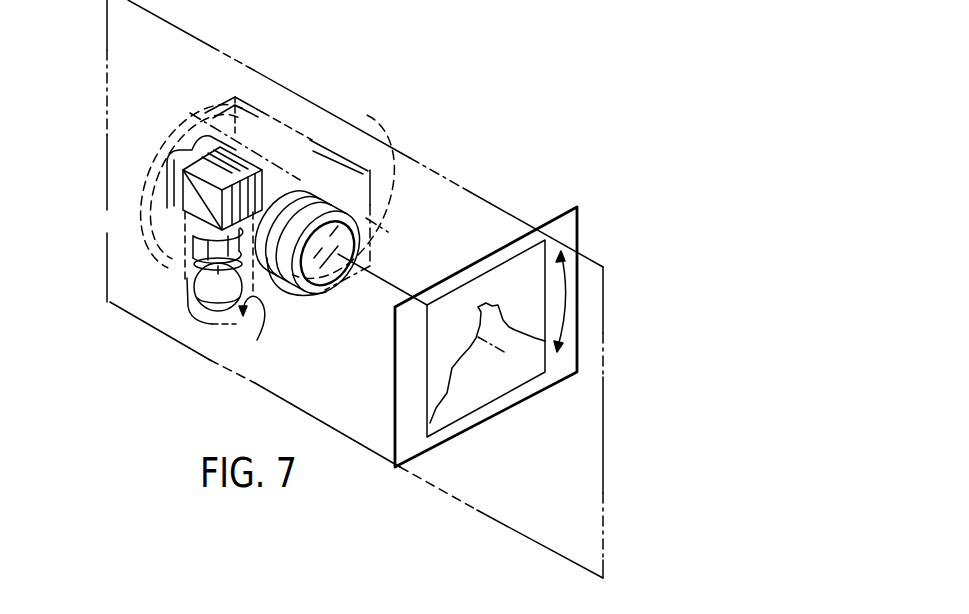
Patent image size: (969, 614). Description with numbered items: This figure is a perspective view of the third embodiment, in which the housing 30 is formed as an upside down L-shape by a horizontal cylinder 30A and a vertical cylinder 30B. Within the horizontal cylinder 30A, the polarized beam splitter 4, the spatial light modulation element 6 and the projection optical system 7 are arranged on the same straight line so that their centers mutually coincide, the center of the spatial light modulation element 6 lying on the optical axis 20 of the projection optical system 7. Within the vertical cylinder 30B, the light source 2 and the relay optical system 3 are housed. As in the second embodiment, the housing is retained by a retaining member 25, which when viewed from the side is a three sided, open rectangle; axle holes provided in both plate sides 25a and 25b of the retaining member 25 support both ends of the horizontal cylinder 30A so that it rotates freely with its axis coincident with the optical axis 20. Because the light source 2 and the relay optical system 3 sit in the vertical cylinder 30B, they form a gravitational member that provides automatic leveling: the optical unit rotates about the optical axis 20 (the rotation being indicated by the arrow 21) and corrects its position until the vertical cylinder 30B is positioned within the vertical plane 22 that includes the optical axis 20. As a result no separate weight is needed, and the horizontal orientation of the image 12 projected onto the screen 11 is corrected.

The light source 2 is at (201, 305).
The relay optical system 3 is at (188, 252).
The polarized beam splitter 4 is at (188, 203).
The spatial light modulation element 6 is at (200, 140).
The projection optical system 7 is at (350, 229).
The screen 11 is at (552, 226).
The image 12 is at (522, 262).
The optical axis 20 is at (388, 276).
The rotation arrow 21 is at (258, 333).
The vertical plane 22 is at (494, 497).
The retaining member 25 is at (407, 153).
The plate side 25a is at (172, 132).
The plate side 25b is at (383, 132).
The housing 30 is at (262, 135).
The horizontal cylinder 30A is at (320, 142).
The vertical cylinder 30B is at (217, 326).